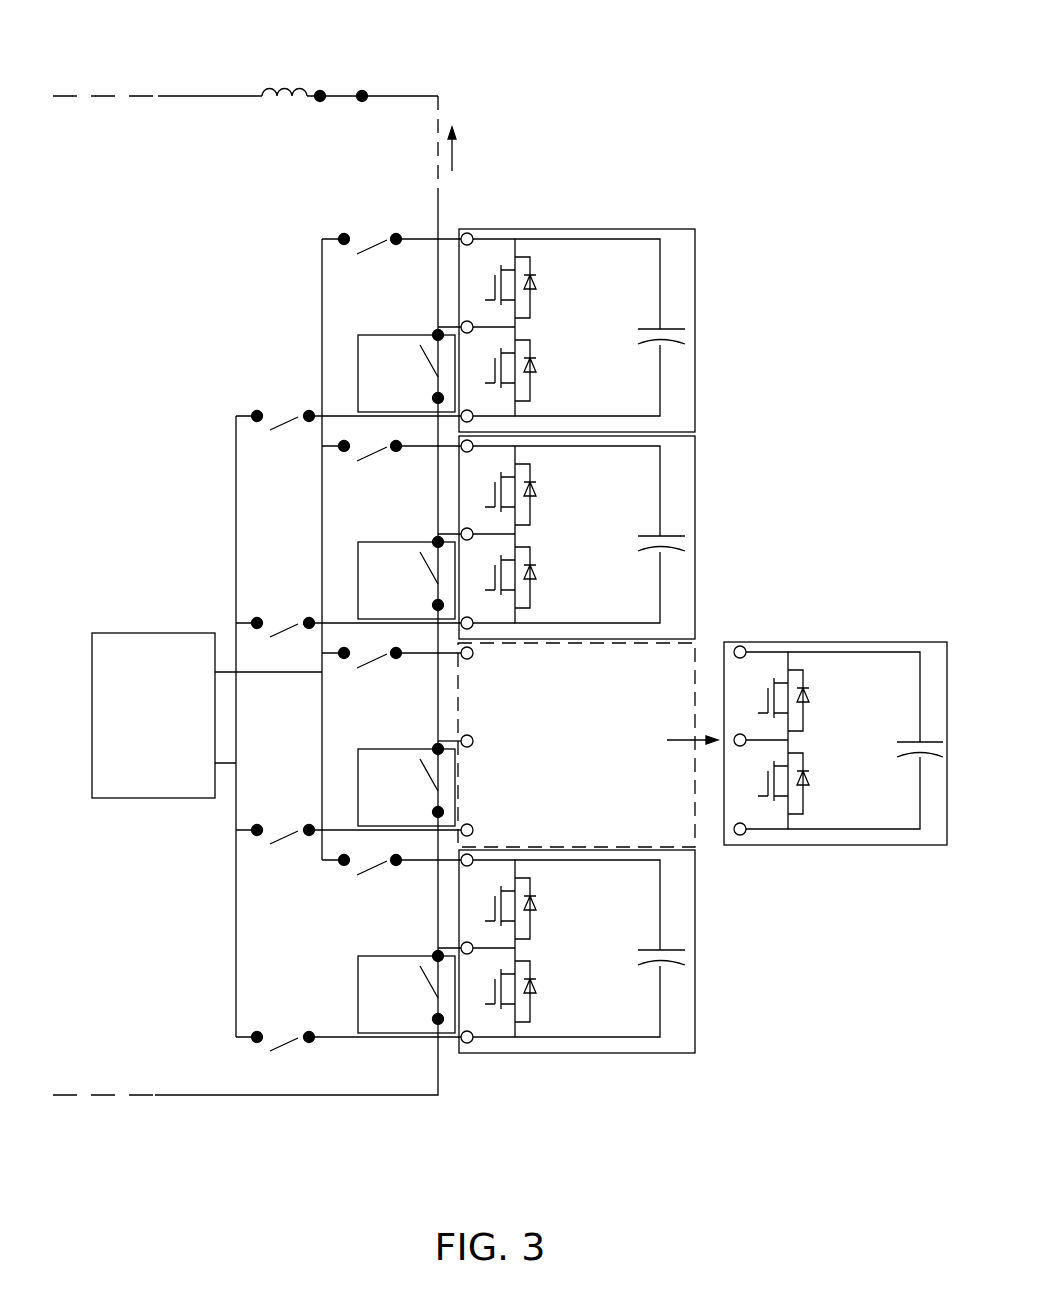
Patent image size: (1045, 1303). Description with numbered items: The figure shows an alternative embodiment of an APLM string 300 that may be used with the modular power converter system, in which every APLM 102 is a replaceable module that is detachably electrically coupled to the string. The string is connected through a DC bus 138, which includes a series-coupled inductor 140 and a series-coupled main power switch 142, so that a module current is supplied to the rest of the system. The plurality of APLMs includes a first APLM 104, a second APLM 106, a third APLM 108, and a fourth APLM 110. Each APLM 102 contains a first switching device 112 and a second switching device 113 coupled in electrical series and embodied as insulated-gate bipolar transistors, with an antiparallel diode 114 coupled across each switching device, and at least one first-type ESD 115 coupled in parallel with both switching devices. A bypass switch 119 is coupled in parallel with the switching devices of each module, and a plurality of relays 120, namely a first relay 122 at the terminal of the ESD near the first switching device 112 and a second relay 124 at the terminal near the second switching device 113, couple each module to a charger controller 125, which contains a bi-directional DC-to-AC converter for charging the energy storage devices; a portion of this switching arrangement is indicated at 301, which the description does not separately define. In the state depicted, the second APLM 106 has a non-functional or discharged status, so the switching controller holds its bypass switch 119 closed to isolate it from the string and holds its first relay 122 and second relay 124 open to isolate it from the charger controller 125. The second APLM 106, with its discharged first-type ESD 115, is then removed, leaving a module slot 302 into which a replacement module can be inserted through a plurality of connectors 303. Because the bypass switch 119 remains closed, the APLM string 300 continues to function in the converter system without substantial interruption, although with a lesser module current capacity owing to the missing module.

The APLM string 300 is at (100, 62).
The series-coupled inductor 140 is at (268, 82).
The main power switch 142 is at (348, 82).
The DC bus 138 is at (176, 98).
The switching network 301 is at (320, 201).
The APLM 102 is at (563, 208).
The fourth APLM 110 is at (695, 304).
The third APLM 108 is at (695, 511).
The first APLM 104 is at (695, 925).
The second APLM 106 is at (838, 642).
The module slot 302 is at (559, 750).
The connectors 303 is at (483, 695).
The second switching device 113 is at (500, 246).
The first switching device 112 is at (502, 327).
The antiparallel diode 114 is at (537, 286).
The first-type ESD 115 is at (647, 329).
The second relay 124 is at (377, 267).
The first relay 122 is at (278, 399).
The plurality of relays 120 is at (293, 1063).
The bypass switch 119 is at (372, 386).
The charger controller 125 is at (132, 729).